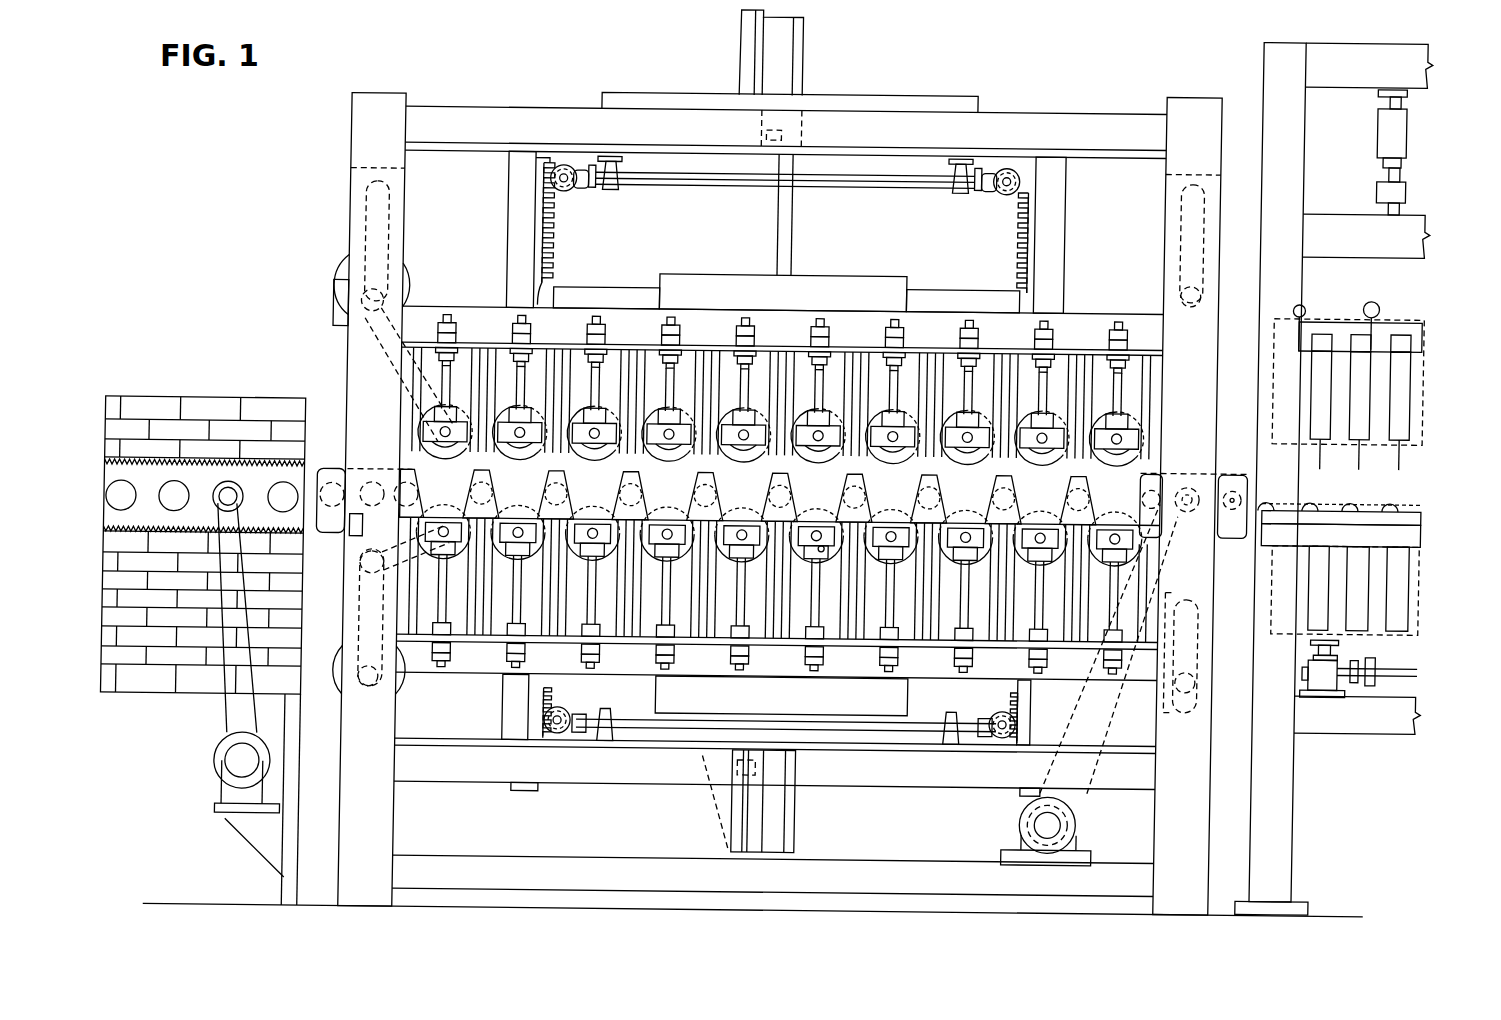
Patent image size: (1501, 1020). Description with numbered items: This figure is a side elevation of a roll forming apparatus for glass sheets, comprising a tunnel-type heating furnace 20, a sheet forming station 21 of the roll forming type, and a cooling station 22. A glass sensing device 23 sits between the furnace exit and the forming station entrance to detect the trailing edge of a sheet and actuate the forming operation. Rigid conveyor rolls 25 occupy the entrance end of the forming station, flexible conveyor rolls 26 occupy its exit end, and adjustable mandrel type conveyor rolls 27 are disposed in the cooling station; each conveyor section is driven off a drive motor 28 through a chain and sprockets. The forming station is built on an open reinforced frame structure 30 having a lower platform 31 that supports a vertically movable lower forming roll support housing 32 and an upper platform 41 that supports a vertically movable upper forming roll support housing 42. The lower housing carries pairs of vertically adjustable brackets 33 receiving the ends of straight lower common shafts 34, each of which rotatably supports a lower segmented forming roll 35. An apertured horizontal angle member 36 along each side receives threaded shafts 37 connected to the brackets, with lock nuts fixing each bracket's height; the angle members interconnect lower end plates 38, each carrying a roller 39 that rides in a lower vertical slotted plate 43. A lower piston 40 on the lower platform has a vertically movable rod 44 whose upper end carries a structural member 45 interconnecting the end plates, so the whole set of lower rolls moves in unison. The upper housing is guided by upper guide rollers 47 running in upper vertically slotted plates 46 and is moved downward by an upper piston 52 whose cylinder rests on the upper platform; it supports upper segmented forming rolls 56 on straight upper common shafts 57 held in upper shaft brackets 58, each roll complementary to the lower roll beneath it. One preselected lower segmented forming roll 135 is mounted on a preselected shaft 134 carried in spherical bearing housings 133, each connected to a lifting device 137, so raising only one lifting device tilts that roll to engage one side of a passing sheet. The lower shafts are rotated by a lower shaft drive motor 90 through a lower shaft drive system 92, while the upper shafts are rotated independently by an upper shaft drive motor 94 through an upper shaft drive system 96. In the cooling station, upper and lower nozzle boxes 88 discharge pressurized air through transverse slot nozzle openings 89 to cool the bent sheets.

The tunnel-type heating furnace 20 is at (205, 399).
The sheet forming station 21 is at (538, 105).
The cooling station 22 is at (1402, 305).
The glass sensing device 23 is at (348, 539).
The conveyor rolls 25 is at (462, 484).
The flexible conveyor rolls 26 is at (1030, 494).
The conveyor rolls 27 is at (1350, 490).
The drive motor 28 is at (220, 774).
The open reinforced frame structure 30 is at (1221, 810).
The lower platform 31 is at (889, 776).
The lower forming roll support housing 32 is at (487, 681).
The vertically adjustable brackets 33 is at (615, 486).
The lower common shafts 34 is at (671, 504).
The lower segmented forming rolls 35 is at (748, 460).
The horizontal angle member 36 is at (984, 639).
The threaded shafts 37 is at (1042, 605).
The lower end plates 38 is at (1084, 818).
The roller 39 is at (1262, 690).
The lower piston 40 is at (804, 830).
The upper platform 41 is at (1080, 136).
The upper forming roll support housing 42 is at (1090, 301).
The lower vertical slotted plates 43 is at (400, 724).
The vertically movable rod 44 is at (784, 750).
The structural member 45 is at (770, 705).
The upper vertically slotted plates 46 is at (1208, 360).
The upper guide rollers 47 is at (1197, 313).
The upper piston 52 is at (797, 61).
The upper segmented forming rolls 56 is at (537, 457).
The upper common shaft 57 is at (965, 453).
The upper shaft brackets 58 is at (1134, 434).
The nozzle boxes 88 is at (1378, 401).
The slot nozzle openings 89 is at (1408, 496).
The lower shaft drive motor 90 is at (344, 720).
The lower shaft drive system 92 is at (348, 587).
The upper shaft drive motor 94 is at (334, 272).
The upper shaft drive system 96 is at (343, 400).
The bearing housings 133 is at (798, 640).
The preselected shaft 134 is at (838, 609).
The preselected lower segmented forming roll 135 is at (818, 500).
The lifting device 137 is at (823, 551).